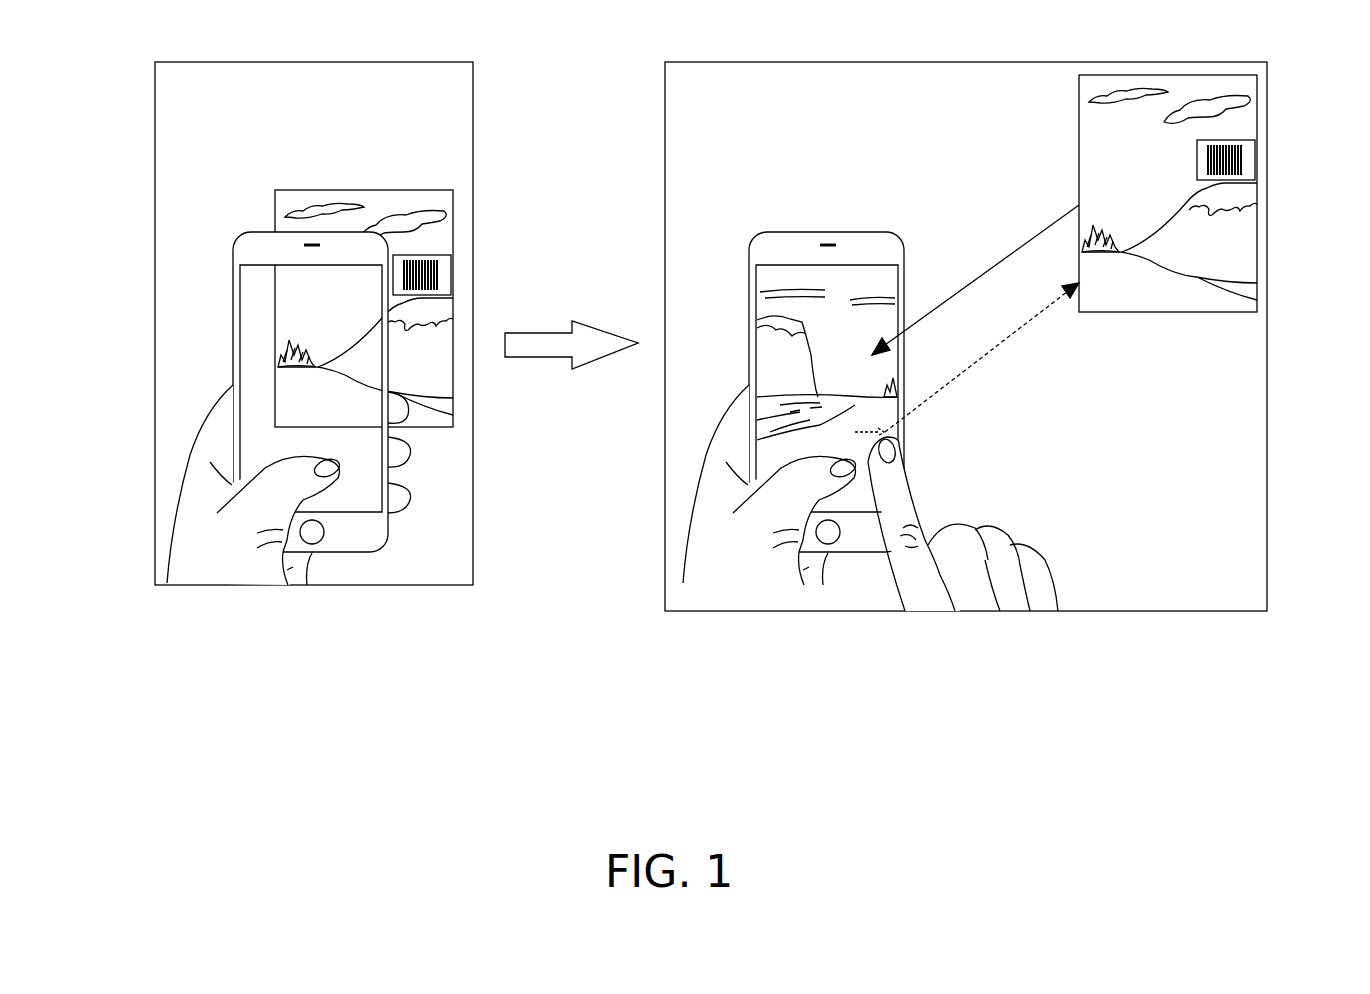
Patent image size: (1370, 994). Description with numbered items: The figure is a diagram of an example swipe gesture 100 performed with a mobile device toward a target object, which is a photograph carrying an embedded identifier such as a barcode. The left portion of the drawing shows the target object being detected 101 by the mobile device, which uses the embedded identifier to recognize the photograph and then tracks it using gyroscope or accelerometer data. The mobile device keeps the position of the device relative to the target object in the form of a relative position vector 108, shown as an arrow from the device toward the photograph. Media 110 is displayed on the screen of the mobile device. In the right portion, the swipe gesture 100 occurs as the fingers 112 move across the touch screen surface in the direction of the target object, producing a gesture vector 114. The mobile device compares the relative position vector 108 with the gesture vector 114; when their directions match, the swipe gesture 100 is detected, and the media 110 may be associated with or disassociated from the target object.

The swipe gesture 100 is at (1017, 666).
The detection of the target object 101 is at (352, 645).
The relative position vector 108 is at (1013, 225).
The media 110 is at (815, 317).
The fingers 112 is at (902, 493).
The gesture vector 114 is at (977, 367).